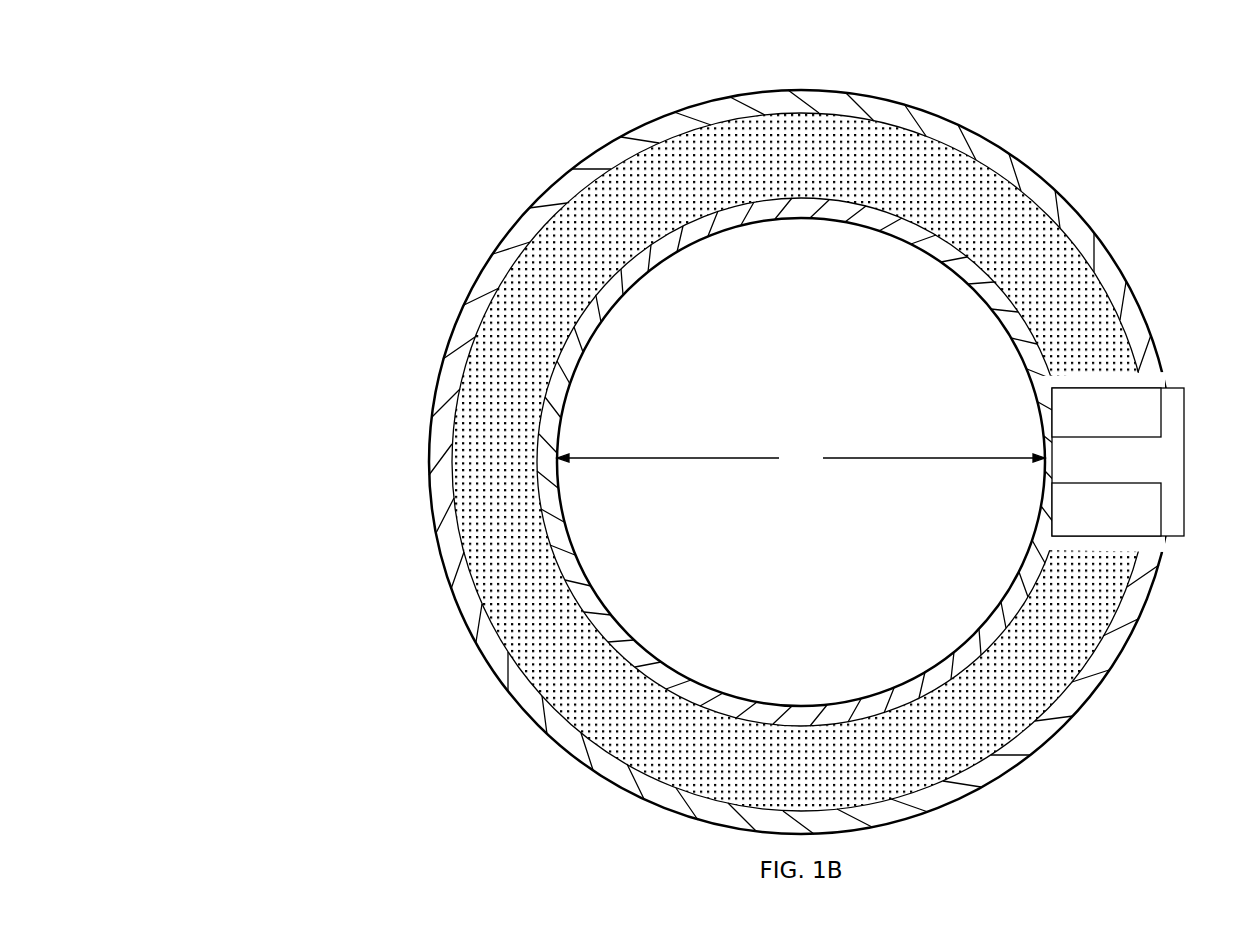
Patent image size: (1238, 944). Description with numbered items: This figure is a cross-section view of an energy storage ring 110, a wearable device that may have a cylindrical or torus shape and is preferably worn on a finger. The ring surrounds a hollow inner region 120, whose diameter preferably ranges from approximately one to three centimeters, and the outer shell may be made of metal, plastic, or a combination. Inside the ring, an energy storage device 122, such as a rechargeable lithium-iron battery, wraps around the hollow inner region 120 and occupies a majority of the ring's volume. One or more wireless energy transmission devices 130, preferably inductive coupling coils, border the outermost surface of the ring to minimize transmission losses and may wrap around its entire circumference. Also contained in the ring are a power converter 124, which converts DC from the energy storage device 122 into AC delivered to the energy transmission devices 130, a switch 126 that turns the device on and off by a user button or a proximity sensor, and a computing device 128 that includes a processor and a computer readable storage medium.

The energy storage ring 110 is at (672, 447).
The hollow inner region 120 is at (687, 345).
The energy storage device 122 is at (782, 171).
The power converter device 124 is at (1088, 425).
The switch 126 is at (1088, 475).
The computing device 128 is at (1088, 519).
The wireless energy transmission device 130 is at (460, 343).